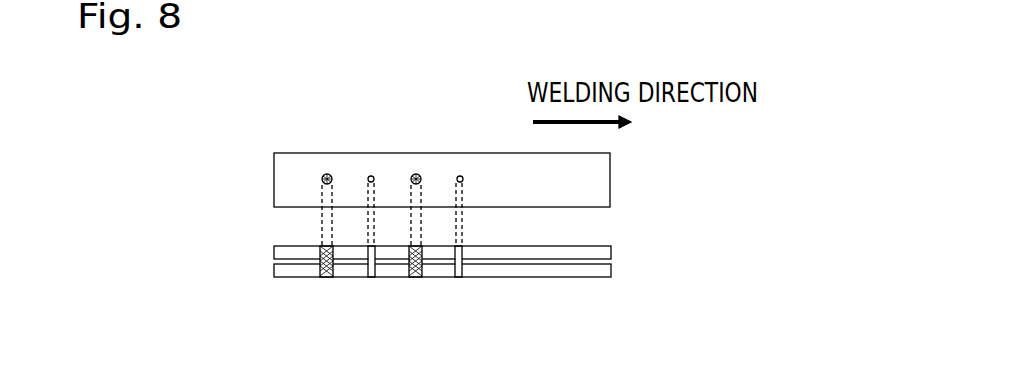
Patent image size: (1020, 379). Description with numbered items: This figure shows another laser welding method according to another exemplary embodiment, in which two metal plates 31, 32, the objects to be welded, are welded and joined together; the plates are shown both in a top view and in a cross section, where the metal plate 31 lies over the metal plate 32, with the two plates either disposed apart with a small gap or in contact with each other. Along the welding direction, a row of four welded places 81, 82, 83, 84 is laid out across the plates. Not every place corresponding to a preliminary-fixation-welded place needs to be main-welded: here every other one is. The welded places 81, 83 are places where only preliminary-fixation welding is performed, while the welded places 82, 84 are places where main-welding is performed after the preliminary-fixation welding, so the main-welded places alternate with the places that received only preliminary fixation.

The metal plate 31 is at (611, 177).
The metal plate 32 is at (605, 277).
The welded place 81 is at (370, 176).
The welded place 82 is at (326, 174).
The welded place 83 is at (459, 176).
The welded place 84 is at (415, 174).